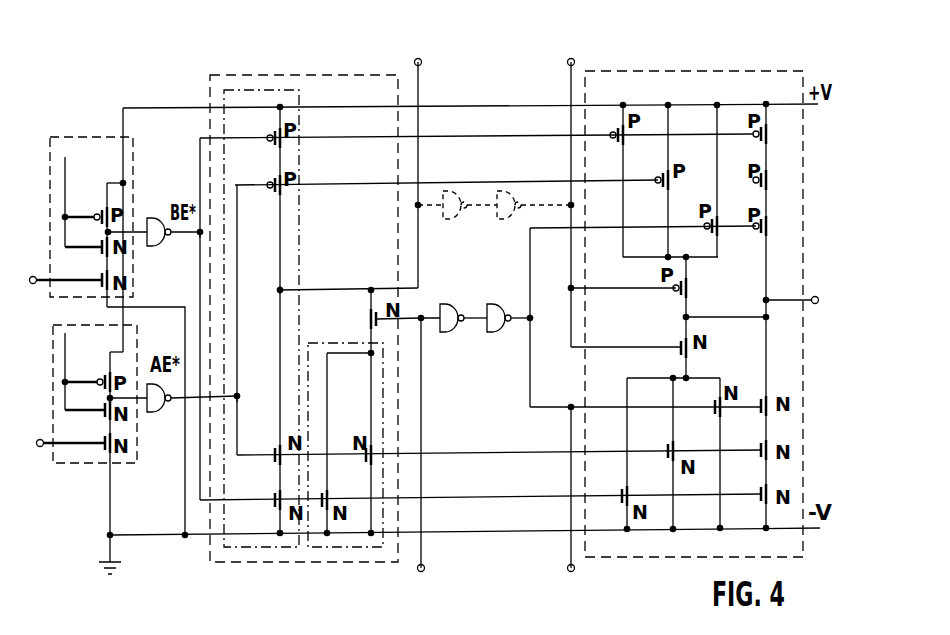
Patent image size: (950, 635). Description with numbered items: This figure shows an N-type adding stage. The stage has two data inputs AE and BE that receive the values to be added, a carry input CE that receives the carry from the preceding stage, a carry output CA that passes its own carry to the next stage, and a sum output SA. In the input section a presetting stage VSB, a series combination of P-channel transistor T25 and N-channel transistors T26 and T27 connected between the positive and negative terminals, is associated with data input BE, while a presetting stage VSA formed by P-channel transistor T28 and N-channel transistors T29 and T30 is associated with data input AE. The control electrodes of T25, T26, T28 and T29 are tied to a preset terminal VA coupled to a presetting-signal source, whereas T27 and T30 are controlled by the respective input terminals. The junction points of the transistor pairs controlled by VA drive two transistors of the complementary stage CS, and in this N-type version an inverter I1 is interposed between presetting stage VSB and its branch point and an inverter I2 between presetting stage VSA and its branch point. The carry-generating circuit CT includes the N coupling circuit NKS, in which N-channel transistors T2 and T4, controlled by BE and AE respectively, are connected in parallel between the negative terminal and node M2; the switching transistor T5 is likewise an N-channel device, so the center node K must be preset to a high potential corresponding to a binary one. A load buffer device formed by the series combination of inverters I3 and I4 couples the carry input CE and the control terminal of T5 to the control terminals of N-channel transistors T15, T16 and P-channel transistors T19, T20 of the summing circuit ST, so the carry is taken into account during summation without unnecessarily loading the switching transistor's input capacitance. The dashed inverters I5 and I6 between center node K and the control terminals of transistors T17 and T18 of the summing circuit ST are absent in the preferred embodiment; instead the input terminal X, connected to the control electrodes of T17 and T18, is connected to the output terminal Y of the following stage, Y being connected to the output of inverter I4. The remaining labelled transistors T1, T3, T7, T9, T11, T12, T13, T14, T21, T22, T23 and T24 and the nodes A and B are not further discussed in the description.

The presetting stage VSB is at (105, 148).
The presetting stage VSA is at (84, 455).
The preset terminal VA is at (77, 277).
The complementary stage CS is at (252, 80).
The carry-generating circuit CT is at (330, 92).
The N coupling circuit NKS is at (348, 540).
The summing circuit ST is at (687, 83).
The N-channel transistor T1 is at (266, 508).
The N-channel transistor T2 is at (334, 495).
The N-channel transistor T3 is at (266, 465).
The N-channel transistor T4 is at (357, 465).
The switching transistor T5 is at (361, 320).
The P-channel transistor T7 is at (263, 195).
The P-channel transistor T9 is at (263, 148).
The N-channel transistor T11 is at (609, 505).
The N-channel transistor T12 is at (747, 502).
The N-channel transistor T13 is at (654, 460).
The N-channel transistor T14 is at (747, 460).
The N-channel transistor T15 is at (698, 416).
The N-channel transistor T16 is at (747, 416).
The transistor T17 is at (667, 359).
The transistor T18 is at (696, 287).
The P-channel transistor T19 is at (726, 235).
The P-channel transistor T20 is at (775, 230).
The P-channel transistor T21 is at (651, 195).
The P-channel transistor T22 is at (775, 183).
The P-channel transistor T23 is at (632, 145).
The P-channel transistor T24 is at (775, 138).
The P-channel transistor T25 is at (87, 207).
The N-channel transistor T26 is at (86, 239).
The N-channel transistor T27 is at (72, 272).
The P-channel transistor T28 is at (89, 372).
The N-channel transistor T29 is at (87, 402).
The N-channel transistor T30 is at (77, 435).
The inverter I1 is at (154, 246).
The inverter I2 is at (140, 413).
The inverter I3 is at (463, 334).
The inverter I4 is at (508, 334).
The inverter I5 is at (457, 221).
The inverter I6 is at (532, 221).
The node M2 is at (349, 367).
The center node K is at (271, 292).
The node A is at (204, 410).
The node B is at (192, 246).
The data input BE is at (33, 294).
The data input AE is at (33, 459).
The carry output CA is at (419, 161).
The carry input CE is at (424, 460).
The input terminal X is at (568, 191).
The output terminal Y is at (572, 504).
The sum output SA is at (802, 287).